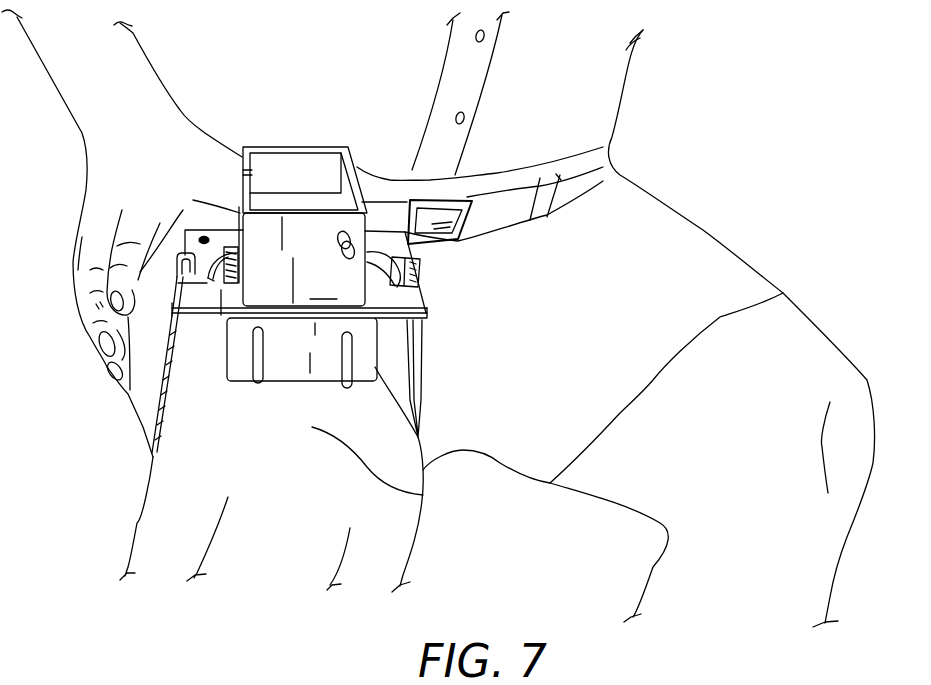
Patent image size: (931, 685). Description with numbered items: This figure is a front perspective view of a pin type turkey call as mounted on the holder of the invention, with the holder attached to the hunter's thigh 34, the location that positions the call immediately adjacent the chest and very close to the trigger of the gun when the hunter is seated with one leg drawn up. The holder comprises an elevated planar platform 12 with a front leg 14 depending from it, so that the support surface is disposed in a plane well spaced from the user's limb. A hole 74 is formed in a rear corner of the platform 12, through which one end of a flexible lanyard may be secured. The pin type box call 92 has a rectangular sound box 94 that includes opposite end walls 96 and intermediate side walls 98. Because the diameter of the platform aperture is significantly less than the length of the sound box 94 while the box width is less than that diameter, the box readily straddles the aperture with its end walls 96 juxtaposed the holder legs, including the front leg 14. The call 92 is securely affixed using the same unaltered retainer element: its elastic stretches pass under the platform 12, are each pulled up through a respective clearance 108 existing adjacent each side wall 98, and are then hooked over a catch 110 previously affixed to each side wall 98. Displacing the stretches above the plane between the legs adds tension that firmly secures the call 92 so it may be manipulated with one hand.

The pin type box call 92 is at (266, 186).
The end walls 96 is at (282, 147).
The sound box 94 is at (236, 180).
The side walls 98 is at (377, 197).
The hole 74 is at (204, 237).
The catch 110 is at (179, 306).
The clearance 108 is at (413, 260).
The planar platform 12 is at (408, 303).
The front leg 14 is at (293, 363).
The thigh 34 is at (423, 495).